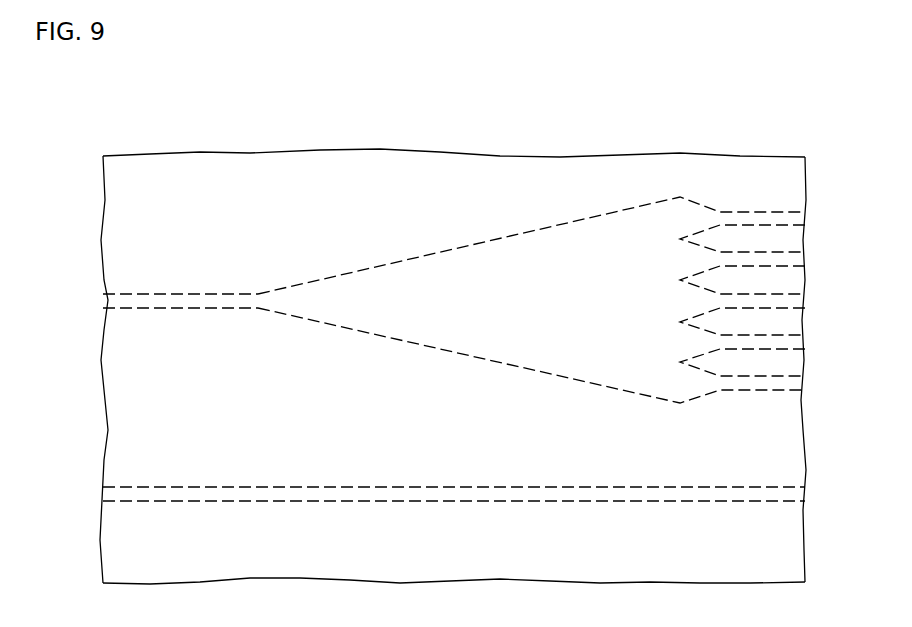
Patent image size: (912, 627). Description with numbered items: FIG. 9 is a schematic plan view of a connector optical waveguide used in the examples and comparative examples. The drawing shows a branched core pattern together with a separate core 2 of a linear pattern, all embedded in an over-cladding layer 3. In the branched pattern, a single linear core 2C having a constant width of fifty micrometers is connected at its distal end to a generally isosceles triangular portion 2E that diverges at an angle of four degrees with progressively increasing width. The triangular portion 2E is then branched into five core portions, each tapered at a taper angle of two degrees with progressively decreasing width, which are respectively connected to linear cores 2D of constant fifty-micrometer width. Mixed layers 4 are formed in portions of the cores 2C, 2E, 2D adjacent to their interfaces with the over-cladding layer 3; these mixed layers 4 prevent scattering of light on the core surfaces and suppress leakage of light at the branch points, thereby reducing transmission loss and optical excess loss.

The core of a linear pattern 2 is at (124, 492).
The linear core 2C is at (122, 300).
The linear cores 2D is at (778, 255).
The generally isosceles triangular portion 2E is at (562, 232).
The over-cladding layer 3 is at (412, 172).
The mixed layers 4 is at (777, 383).